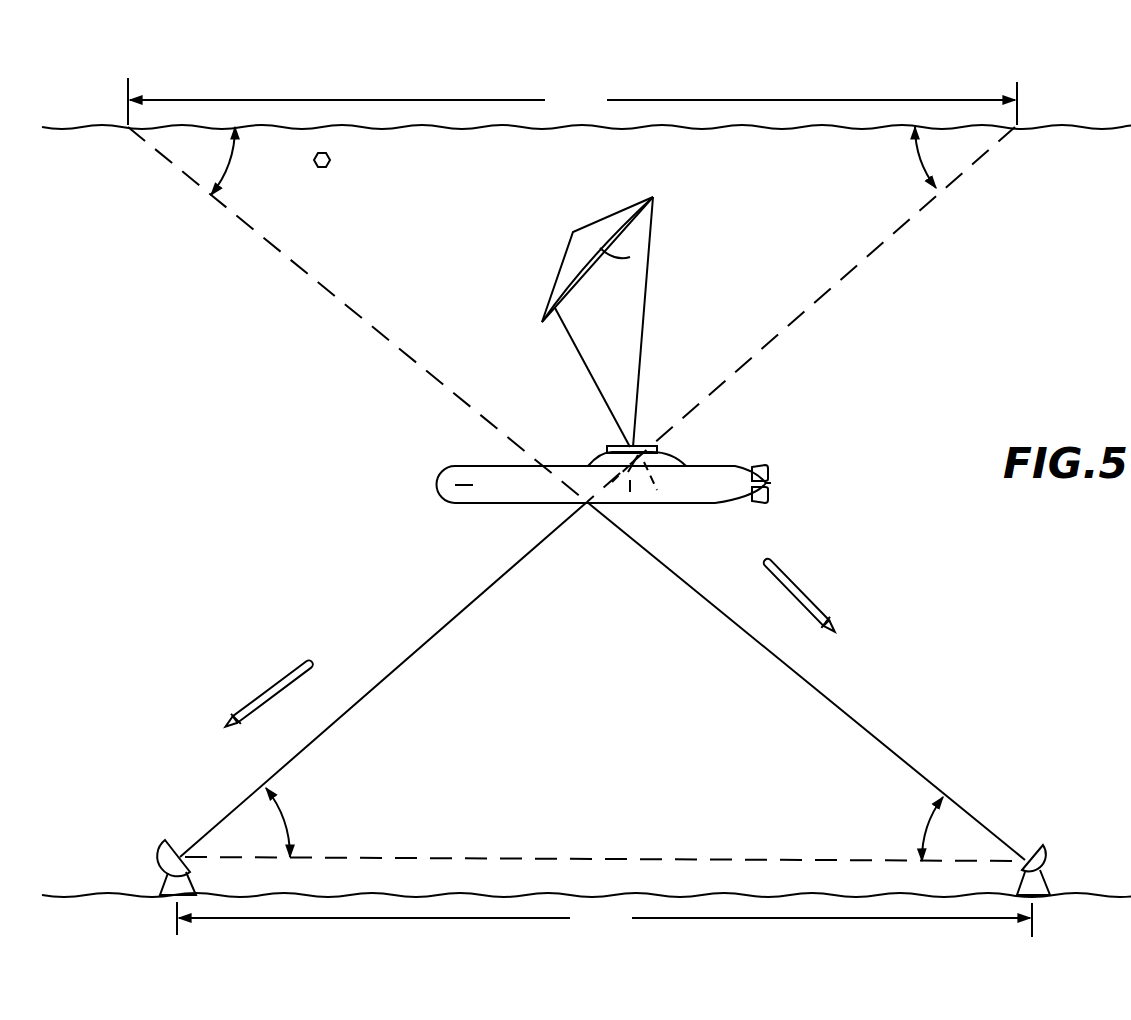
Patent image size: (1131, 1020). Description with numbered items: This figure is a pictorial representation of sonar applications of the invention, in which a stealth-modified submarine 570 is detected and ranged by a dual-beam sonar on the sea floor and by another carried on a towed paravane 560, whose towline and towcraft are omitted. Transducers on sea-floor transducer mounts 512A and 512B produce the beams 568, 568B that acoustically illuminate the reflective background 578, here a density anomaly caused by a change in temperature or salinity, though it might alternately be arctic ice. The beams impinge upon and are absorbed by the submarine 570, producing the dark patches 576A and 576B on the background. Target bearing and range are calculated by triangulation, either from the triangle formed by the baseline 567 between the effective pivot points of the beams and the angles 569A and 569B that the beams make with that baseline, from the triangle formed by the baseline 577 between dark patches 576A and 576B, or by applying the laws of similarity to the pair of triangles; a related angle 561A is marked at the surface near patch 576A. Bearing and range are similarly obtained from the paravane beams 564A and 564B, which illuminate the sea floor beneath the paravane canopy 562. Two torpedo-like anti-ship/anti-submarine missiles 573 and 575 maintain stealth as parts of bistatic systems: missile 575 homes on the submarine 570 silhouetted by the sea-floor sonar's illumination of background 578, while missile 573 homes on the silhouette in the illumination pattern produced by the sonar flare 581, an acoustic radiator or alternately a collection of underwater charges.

The sea-floor transducer mount 512A is at (162, 855).
The sea-floor transducer mount 512B is at (1043, 855).
The towed paravane 560 is at (560, 270).
The canopy 562 is at (630, 257).
The paravane beam 564A is at (593, 380).
The paravane beam 564B is at (645, 300).
The baseline 567 is at (604, 919).
The beam 568 is at (498, 584).
The beam 568B is at (833, 706).
The angle 569A is at (290, 832).
The angle 569B is at (232, 165).
The angle at surface point 561A is at (918, 160).
The stealth-modified submarine 570 is at (722, 465).
The torpedo-like anti-ship/anti-submarine missile 573 is at (818, 606).
The torpedo-like anti-ship/anti-submarine missile 575 is at (270, 688).
The dark patch 576A is at (1013, 128).
The dark patch 576B is at (128, 128).
The baseline 577 is at (572, 101).
The reflective background 578 is at (1055, 126).
The sonar flare 581 is at (330, 158).